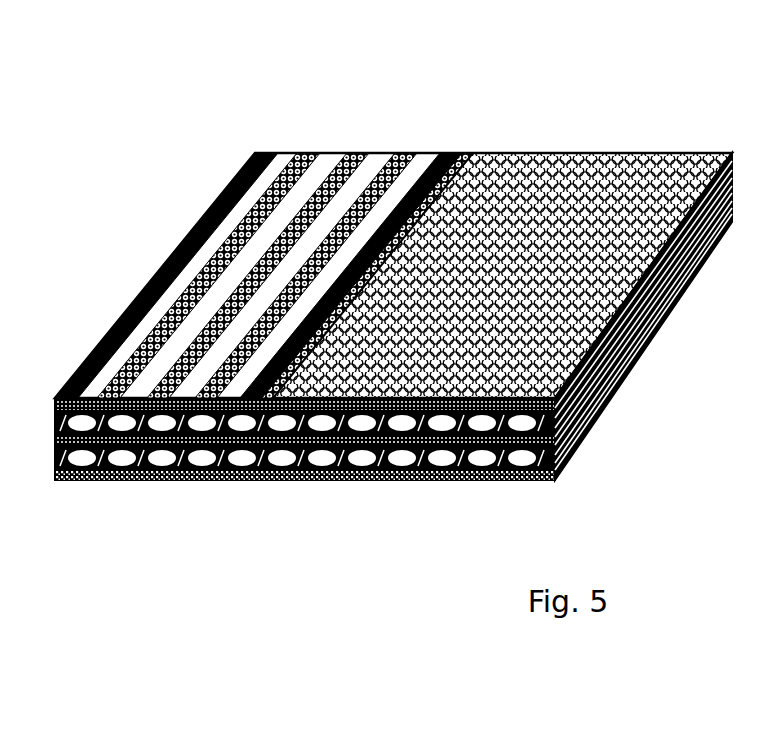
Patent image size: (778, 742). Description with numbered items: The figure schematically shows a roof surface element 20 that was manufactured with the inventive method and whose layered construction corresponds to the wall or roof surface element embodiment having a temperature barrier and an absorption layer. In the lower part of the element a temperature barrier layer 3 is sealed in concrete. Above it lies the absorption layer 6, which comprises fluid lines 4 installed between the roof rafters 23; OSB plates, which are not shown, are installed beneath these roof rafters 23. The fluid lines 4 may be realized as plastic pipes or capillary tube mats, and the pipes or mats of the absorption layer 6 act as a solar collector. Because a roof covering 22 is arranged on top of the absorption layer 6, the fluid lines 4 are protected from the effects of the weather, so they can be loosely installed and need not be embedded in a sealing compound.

The roof surface element 20 is at (112, 573).
The roof rafters 23 is at (90, 352).
The fluid lines 4 is at (303, 153).
The roof covering 22 is at (578, 223).
The absorption layer 6 is at (55, 426).
The temperature barrier layer 3 is at (572, 437).